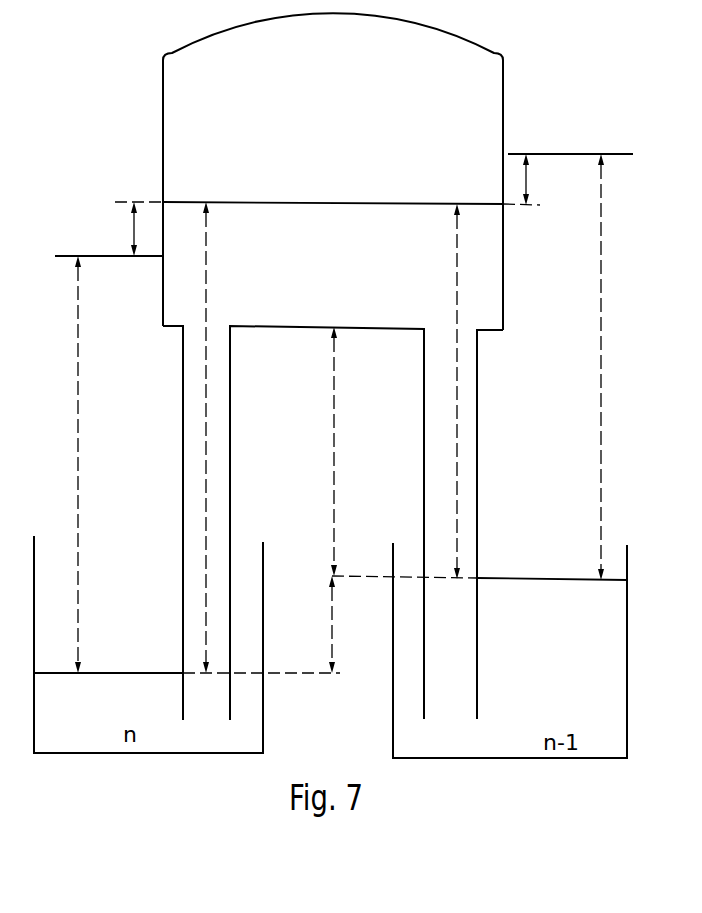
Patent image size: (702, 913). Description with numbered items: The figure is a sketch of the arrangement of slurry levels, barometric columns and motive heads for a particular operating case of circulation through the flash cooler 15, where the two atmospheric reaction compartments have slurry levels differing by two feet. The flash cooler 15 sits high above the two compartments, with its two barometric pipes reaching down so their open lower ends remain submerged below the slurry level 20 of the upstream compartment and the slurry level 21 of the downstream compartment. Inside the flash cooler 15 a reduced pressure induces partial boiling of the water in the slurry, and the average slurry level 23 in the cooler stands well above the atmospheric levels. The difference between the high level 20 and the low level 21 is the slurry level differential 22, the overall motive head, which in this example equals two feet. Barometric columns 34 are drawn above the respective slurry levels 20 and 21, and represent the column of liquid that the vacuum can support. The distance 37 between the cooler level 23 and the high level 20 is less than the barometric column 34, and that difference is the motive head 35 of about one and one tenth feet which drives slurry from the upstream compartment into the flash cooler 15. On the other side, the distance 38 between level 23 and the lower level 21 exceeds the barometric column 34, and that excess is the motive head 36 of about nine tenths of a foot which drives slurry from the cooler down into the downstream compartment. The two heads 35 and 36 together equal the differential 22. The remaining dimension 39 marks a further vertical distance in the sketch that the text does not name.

The flash cooler 15 is at (325, 91).
The slurry level in the flash cooler 23 is at (323, 203).
The slurry level of compartment n-1 20 is at (530, 582).
The slurry level of compartment n 21 is at (138, 672).
The slurry level differential 22 is at (331, 636).
The barometric column 34 is at (80, 395).
The motive head for flow into the flash cooler 35 is at (527, 181).
The motive head for flow out of the flash cooler 36 is at (133, 235).
The distance between levels 23 and 20 37 is at (457, 403).
The distance between levels 23 and 21 38 is at (206, 390).
The height from vessel bottom to level 39 is at (333, 402).